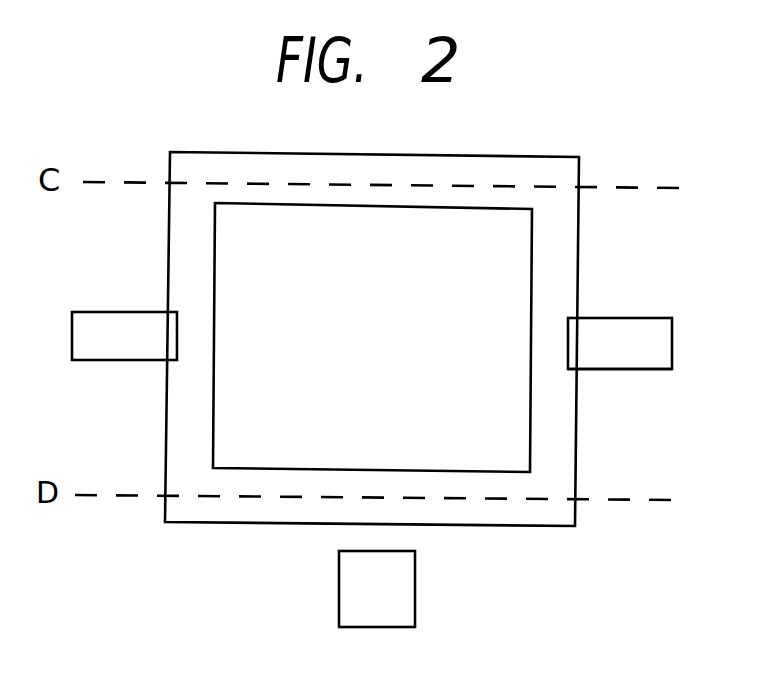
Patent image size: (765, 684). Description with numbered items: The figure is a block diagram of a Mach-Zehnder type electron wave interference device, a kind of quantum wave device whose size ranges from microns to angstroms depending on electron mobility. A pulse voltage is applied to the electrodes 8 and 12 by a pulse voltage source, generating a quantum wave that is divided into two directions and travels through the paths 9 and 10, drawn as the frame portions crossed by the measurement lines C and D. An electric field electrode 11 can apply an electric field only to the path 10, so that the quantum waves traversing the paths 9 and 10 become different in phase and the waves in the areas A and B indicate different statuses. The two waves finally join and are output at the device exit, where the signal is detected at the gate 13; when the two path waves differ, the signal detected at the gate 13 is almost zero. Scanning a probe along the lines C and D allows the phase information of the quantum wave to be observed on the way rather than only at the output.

The electrode 8 is at (106, 311).
The path 9 is at (242, 183).
The path 10 is at (188, 476).
The electric field electrode 11 is at (340, 607).
The electrode 12 is at (639, 317).
The gate 13 is at (650, 370).